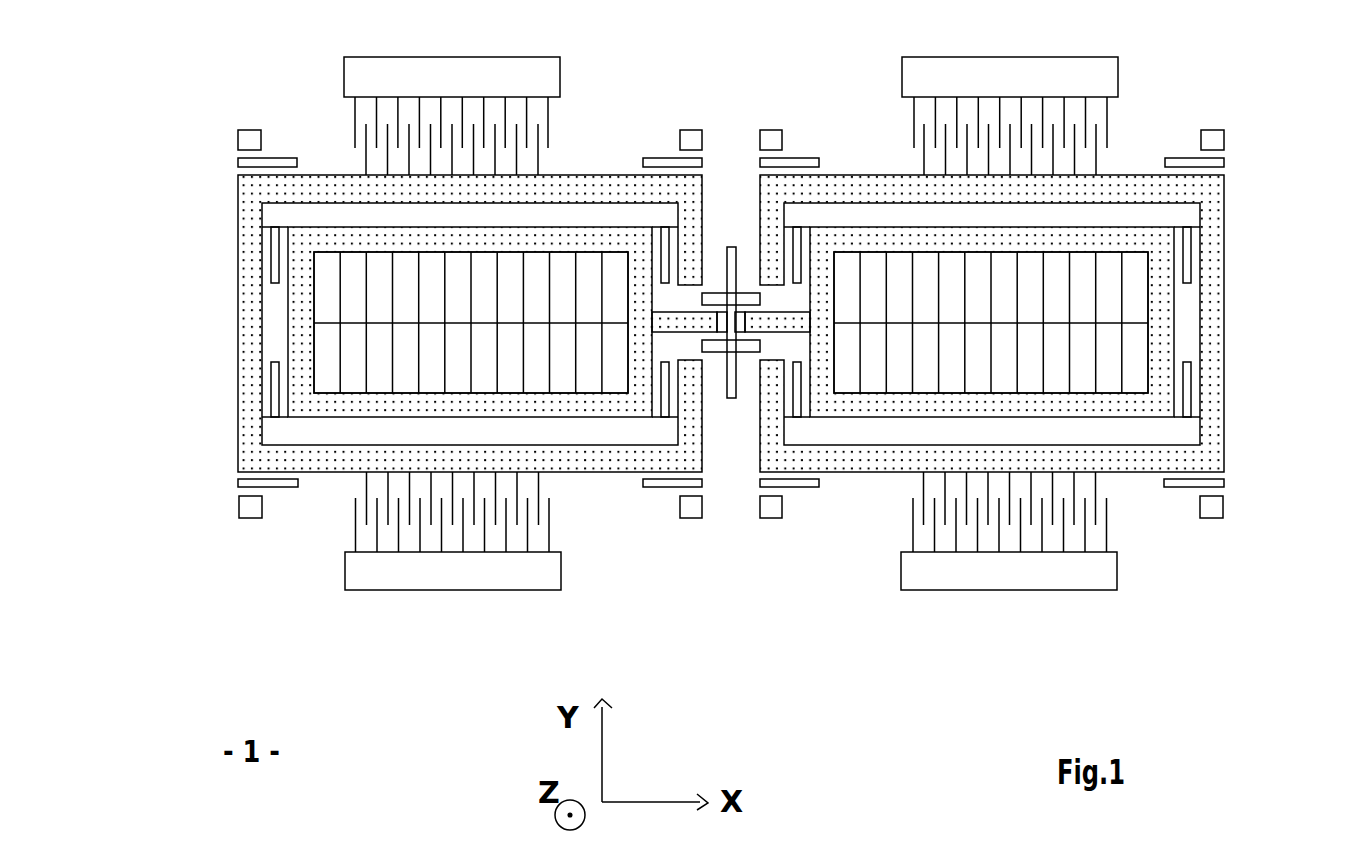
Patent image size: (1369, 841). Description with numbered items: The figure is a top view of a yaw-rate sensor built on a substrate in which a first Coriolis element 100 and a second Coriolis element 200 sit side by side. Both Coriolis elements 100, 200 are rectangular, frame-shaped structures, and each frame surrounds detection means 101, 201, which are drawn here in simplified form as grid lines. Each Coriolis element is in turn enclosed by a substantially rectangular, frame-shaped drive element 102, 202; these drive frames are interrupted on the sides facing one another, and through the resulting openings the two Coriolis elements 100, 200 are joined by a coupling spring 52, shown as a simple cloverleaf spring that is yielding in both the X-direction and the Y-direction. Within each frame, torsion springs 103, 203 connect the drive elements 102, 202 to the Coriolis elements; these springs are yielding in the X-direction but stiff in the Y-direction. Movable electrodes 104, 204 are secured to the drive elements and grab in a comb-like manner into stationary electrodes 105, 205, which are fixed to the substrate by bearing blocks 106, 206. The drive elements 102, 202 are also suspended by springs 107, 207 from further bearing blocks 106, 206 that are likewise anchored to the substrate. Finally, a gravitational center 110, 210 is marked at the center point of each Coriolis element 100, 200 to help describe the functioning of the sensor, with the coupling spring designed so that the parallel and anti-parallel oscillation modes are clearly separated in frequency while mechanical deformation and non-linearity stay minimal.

The coupling spring 52 is at (731, 430).
The first Coriolis element 100 is at (436, 322).
The detection means 101 is at (381, 322).
The drive element 102 is at (420, 323).
The torsion springs 103 is at (393, 313).
The movable electrodes 104 is at (503, 338).
The stationary electrodes 105 is at (486, 367).
The bearing blocks 106 is at (447, 369).
The springs 107 is at (470, 392).
The gravitational center 110 is at (471, 498).
The second Coriolis element 200 is at (1035, 322).
The detection means 201 is at (1080, 308).
The drive element 202 is at (1056, 323).
The torsion springs 203 is at (1076, 272).
The movable electrodes 204 is at (1072, 352).
The stationary electrodes 205 is at (1054, 368).
The bearing blocks 206 is at (1033, 363).
The springs 207 is at (1036, 330).
The gravitational center 210 is at (991, 492).